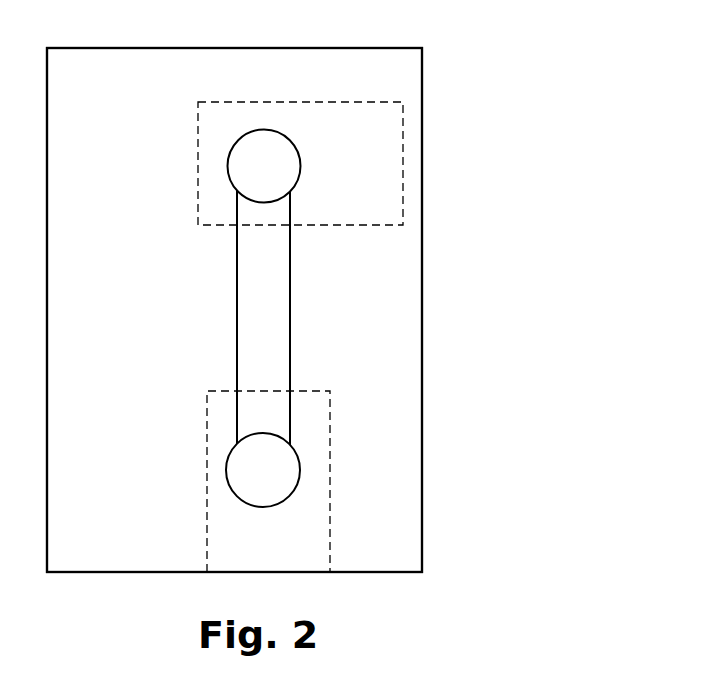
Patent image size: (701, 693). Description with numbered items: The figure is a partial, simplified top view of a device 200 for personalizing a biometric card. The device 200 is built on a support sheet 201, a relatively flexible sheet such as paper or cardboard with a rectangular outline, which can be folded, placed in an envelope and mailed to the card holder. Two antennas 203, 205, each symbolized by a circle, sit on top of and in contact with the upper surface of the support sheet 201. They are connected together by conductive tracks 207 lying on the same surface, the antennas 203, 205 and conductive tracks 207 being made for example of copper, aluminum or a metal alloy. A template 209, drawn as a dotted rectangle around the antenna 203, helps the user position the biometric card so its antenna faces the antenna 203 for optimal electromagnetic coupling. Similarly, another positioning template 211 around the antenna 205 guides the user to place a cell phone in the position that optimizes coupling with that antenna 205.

The device 200 is at (454, 54).
The support sheet 201 is at (422, 360).
The antenna 203 is at (274, 129).
The antenna 205 is at (245, 505).
The conductive tracks 207 is at (290, 317).
The template 209 is at (403, 164).
The positioning template 211 is at (207, 460).